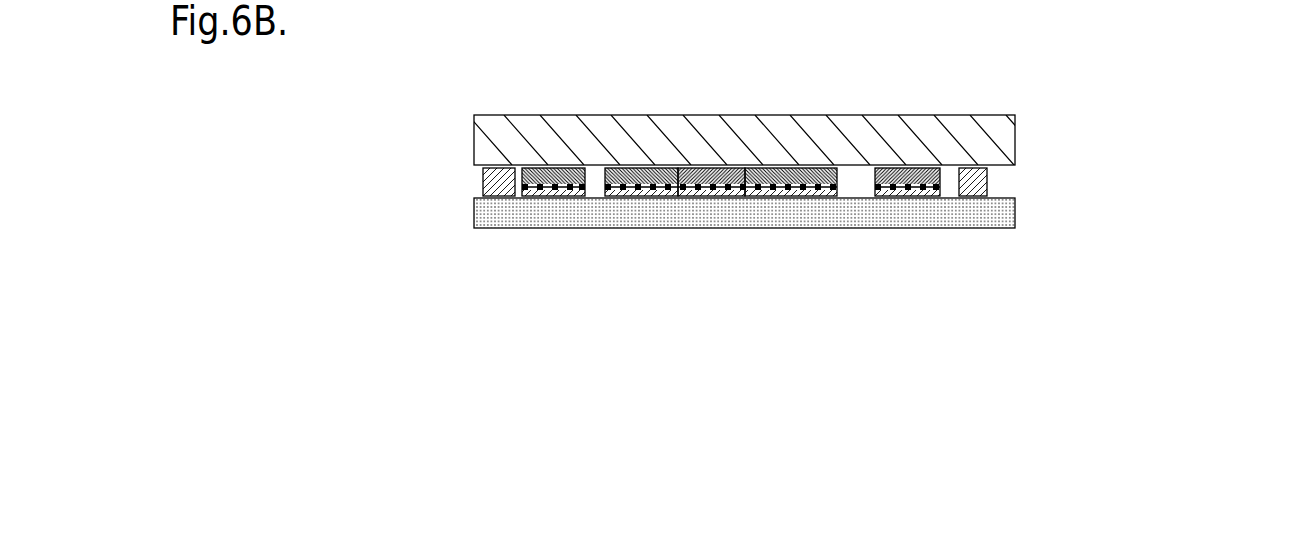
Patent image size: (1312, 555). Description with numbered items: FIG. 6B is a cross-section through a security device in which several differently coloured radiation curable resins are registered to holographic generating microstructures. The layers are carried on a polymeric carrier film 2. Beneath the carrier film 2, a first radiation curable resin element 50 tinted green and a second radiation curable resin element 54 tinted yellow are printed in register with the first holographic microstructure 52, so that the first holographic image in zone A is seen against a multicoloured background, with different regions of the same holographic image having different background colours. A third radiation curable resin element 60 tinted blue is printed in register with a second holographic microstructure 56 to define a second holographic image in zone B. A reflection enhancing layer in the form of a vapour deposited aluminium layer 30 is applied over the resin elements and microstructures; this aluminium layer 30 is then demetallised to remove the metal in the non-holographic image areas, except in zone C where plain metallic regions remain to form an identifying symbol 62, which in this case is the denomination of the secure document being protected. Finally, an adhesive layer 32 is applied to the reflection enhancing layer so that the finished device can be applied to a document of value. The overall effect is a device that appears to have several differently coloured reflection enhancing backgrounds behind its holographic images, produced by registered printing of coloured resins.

The polymeric carrier film 2 is at (490, 128).
The vapour deposited aluminium layer 30 is at (987, 188).
The adhesive layer 32 is at (998, 223).
The first radiation curable resin element 50 is at (645, 182).
The first holographic microstructure 52 is at (727, 185).
The second radiation curable resin element 54 is at (707, 182).
The second holographic microstructure 56 is at (911, 180).
The third radiation curable resin element 60 is at (523, 170).
The identifying symbol 62 is at (498, 182).